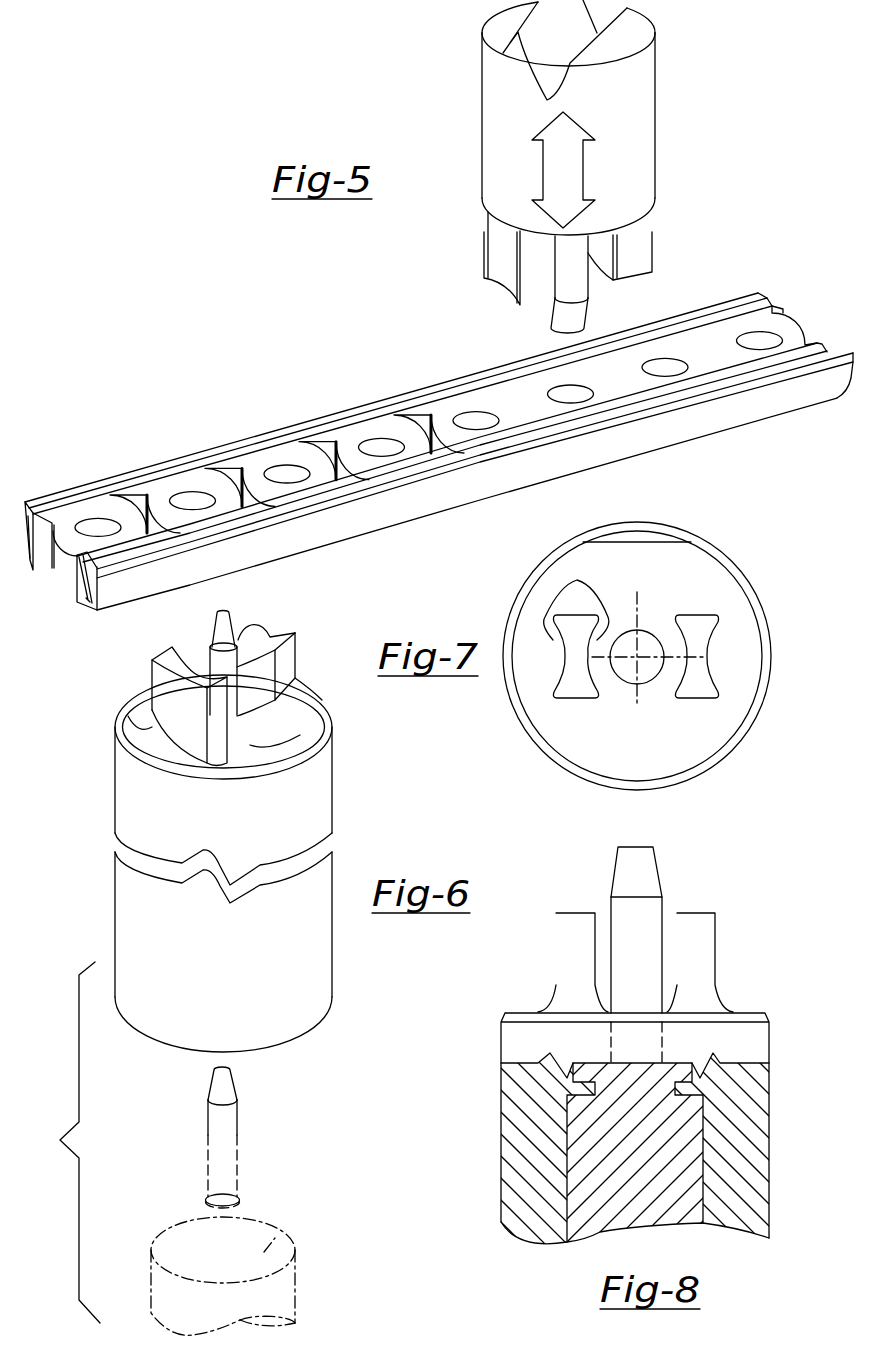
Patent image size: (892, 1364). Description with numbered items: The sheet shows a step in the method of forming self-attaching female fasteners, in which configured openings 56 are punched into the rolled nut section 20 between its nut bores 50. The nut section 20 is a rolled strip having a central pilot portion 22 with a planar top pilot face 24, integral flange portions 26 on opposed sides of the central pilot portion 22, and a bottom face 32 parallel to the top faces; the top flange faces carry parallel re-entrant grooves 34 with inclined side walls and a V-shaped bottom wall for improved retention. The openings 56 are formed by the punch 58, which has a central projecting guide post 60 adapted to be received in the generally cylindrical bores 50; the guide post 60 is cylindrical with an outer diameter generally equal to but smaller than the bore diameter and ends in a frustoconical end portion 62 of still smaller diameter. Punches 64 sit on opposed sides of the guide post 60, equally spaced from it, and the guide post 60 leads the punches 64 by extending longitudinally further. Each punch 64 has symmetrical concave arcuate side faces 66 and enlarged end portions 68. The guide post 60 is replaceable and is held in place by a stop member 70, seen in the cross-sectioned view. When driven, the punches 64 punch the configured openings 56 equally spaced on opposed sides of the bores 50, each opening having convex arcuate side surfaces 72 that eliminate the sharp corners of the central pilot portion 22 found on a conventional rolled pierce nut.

In FIG. 5, the nut section 20 is at (118, 325).
In FIG. 5, the central pilot portion 22 is at (475, 400).
In FIG. 5, the top pilot face 24 is at (370, 433).
In FIG. 5, the flange portion 26 is at (68, 492).
In FIG. 5, the bottom face 32 is at (737, 412).
In FIG. 5, the re-entrant groove 34 is at (275, 440).
In FIG. 5, the nut bore 50 is at (197, 500).
In FIG. 5, the configured opening 56 is at (147, 504).
In FIG. 5, the punch 58 is at (657, 78).
In FIG. 6, the punch 58 is at (80, 842).
In FIG. 7, the punch 58 is at (748, 536).
In FIG. 8, the punch 58 is at (778, 986).
In FIG. 5, the central projecting guide post 60 is at (585, 291).
In FIG. 6, the central projecting guide post 60 is at (220, 660).
In FIG. 7, the central projecting guide post 60 is at (650, 632).
In FIG. 8, the central projecting guide post 60 is at (650, 924).
In FIG. 5, the frustoconical end portion 62 is at (553, 323).
In FIG. 6, the frustoconical end portion 62 is at (214, 628).
In FIG. 8, the frustoconical end portion 62 is at (620, 870).
In FIG. 5, the punch 64 is at (656, 226).
In FIG. 6, the punch 64 is at (143, 665).
In FIG. 7, the punch 64 is at (715, 672).
In FIG. 8, the punch 64 is at (550, 955).
In FIG. 6, the concave arcuate side face 66 is at (262, 628).
In FIG. 7, the concave arcuate side face 66 is at (575, 615).
In FIG. 6, the enlarged end portion 68 is at (292, 661).
In FIG. 7, the enlarged end portion 68 is at (700, 617).
In FIG. 6, the stop member 70 is at (275, 1238).
In FIG. 8, the stop member 70 is at (592, 1155).
In FIG. 5, the convex arcuate side surface 72 is at (255, 502).